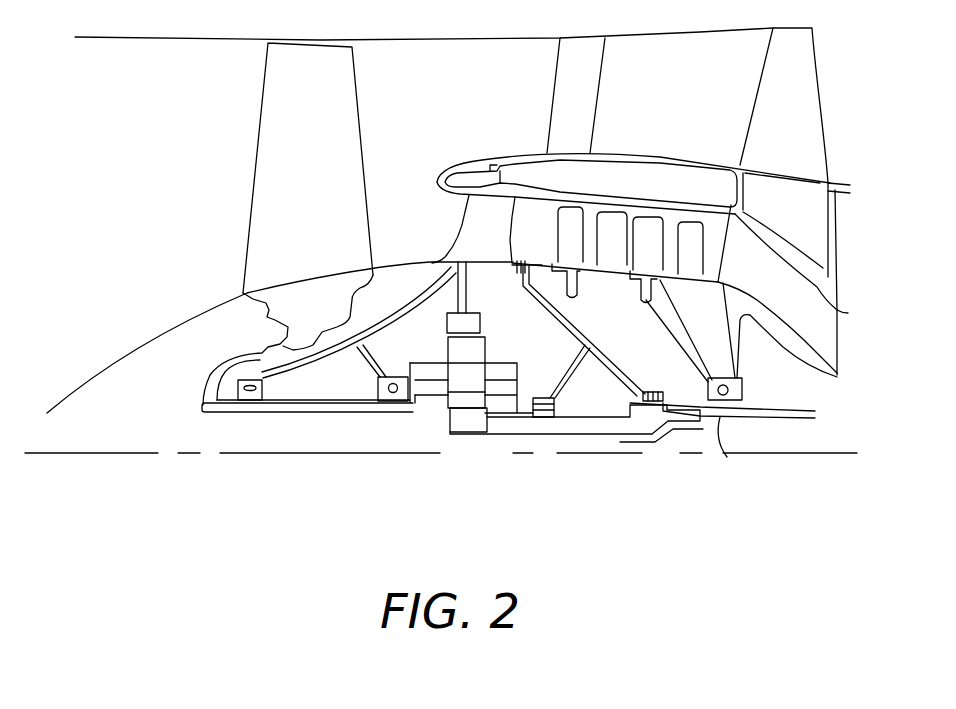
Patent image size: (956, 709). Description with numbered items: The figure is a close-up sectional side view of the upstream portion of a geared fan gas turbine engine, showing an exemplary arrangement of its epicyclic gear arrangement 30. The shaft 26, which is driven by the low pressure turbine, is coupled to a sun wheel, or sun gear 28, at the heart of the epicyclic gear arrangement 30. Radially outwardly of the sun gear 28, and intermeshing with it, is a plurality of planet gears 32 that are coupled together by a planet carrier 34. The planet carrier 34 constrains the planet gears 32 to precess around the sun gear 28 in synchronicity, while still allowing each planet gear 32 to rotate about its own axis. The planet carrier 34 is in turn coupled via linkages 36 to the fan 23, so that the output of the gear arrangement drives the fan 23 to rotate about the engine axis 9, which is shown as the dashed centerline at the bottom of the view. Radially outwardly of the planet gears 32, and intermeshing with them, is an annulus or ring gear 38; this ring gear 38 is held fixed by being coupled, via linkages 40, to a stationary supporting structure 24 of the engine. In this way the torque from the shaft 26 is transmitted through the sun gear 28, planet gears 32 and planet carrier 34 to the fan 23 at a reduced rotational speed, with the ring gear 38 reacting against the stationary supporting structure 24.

The engine axis 9 is at (138, 453).
The fan 23 is at (277, 217).
The stationary supporting structure 24 is at (468, 220).
The shaft 26 is at (593, 435).
The sun gear 28 is at (468, 432).
The epicyclic gear arrangement 30 is at (433, 405).
The planet gears 32 is at (455, 395).
The planet carrier 34 is at (510, 397).
The linkages 36 is at (423, 398).
The ring gear 38 is at (470, 322).
The linkages 40 is at (467, 292).